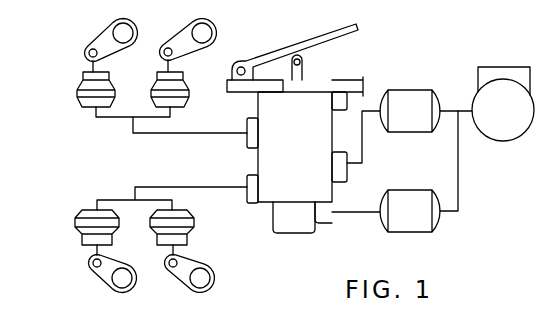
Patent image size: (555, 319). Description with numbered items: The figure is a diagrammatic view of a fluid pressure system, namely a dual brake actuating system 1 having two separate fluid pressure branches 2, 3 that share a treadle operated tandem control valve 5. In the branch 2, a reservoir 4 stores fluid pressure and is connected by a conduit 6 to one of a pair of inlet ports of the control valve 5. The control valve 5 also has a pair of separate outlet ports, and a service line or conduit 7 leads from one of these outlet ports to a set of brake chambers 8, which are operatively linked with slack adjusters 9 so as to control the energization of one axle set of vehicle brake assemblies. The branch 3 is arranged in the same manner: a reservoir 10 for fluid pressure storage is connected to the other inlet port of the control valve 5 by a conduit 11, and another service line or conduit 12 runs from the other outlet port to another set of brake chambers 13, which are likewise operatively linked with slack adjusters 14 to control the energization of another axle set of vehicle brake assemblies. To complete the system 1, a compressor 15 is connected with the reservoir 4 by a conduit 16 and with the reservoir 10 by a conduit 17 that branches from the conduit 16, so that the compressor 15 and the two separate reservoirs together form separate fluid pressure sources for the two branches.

The dual brake actuating system 1 is at (130, 163).
The fluid pressure branch 2 is at (235, 38).
The fluid pressure branch 3 is at (233, 272).
The reservoir 4 is at (405, 90).
The treadle operated tandem control valve 5 is at (291, 157).
The conduit 6 is at (362, 147).
The service line or conduit 7 is at (180, 134).
The brake chambers 8 is at (155, 81).
The slack adjusters 9 is at (182, 25).
The reservoir 10 is at (408, 190).
The conduit 11 is at (362, 215).
The service line or conduit 12 is at (226, 189).
The brake chambers 13 is at (157, 237).
The slack adjusters 14 is at (182, 283).
The compressor 15 is at (503, 76).
The conduit 16 is at (455, 110).
The conduit 17 is at (460, 163).